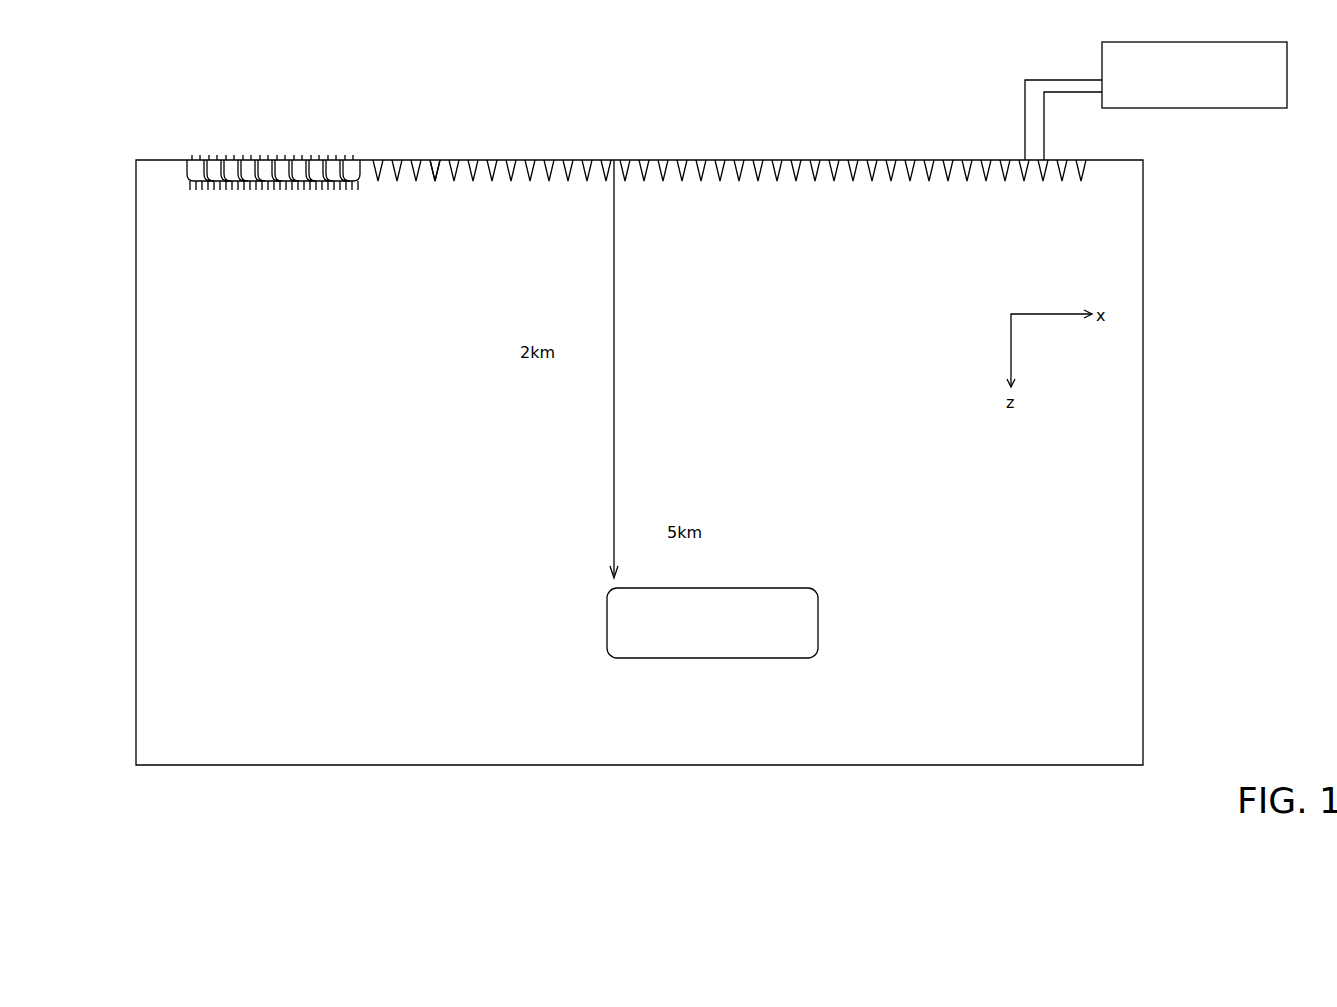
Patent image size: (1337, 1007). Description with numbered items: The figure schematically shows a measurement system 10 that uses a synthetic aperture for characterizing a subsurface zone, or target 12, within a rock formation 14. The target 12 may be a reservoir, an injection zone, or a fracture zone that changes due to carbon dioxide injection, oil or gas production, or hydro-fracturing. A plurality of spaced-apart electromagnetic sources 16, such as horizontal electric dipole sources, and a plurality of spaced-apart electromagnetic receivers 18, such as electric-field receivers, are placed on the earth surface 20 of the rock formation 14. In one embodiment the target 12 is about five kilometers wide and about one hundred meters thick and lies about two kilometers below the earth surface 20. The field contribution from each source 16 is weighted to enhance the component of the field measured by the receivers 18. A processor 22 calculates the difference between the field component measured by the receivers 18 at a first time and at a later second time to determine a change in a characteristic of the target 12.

The measurement system 10 is at (646, 130).
The target 12 is at (703, 644).
The rock formation 14 is at (455, 676).
The electromagnetic sources 16 is at (322, 158).
The electromagnetic receivers 18 is at (972, 153).
The earth surface 20 is at (441, 158).
The processor 22 is at (1185, 101).